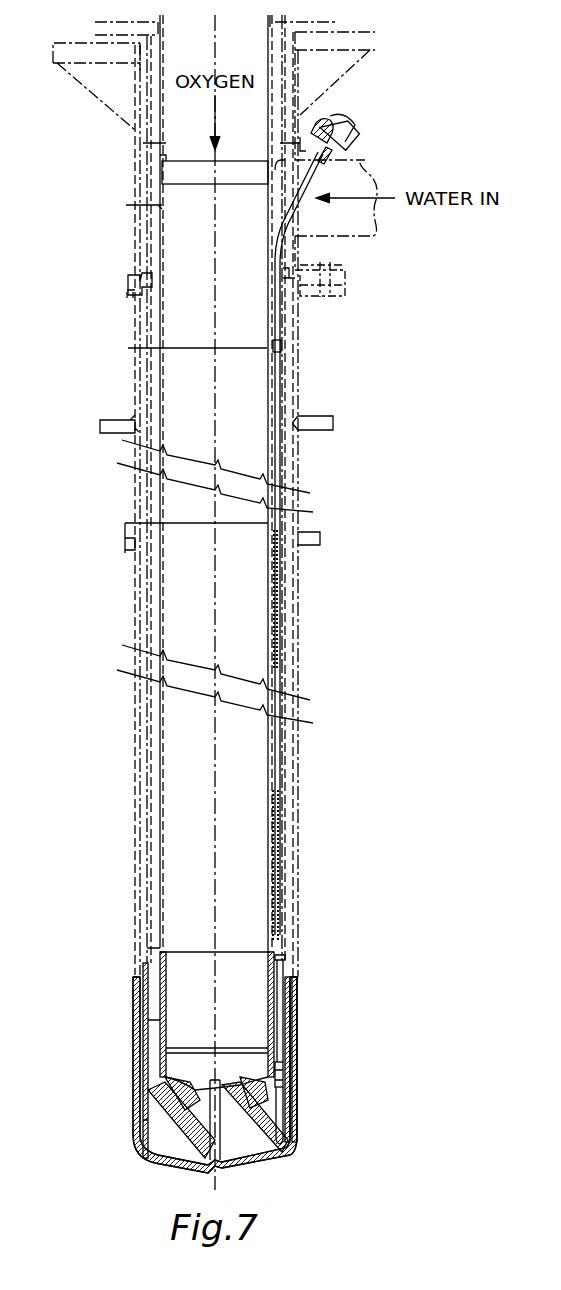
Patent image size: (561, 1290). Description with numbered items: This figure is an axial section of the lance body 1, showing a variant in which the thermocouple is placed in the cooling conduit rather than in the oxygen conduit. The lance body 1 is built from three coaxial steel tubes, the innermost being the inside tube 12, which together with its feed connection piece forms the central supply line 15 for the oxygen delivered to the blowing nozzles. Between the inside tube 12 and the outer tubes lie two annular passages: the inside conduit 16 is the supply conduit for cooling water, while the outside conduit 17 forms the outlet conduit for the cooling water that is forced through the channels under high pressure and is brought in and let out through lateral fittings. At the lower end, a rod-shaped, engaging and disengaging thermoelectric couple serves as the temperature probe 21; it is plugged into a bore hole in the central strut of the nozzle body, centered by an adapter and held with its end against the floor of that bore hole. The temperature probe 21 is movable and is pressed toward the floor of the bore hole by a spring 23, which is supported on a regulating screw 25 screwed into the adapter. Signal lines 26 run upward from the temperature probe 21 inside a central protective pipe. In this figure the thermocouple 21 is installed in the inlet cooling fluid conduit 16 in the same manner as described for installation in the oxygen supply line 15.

The lance body 1 is at (100, 1082).
The inside tube 12 is at (162, 800).
The central supply line 15 is at (195, 887).
The inside conduit 16 is at (290, 984).
The outside conduit 17 is at (292, 1010).
The temperature probe 21 is at (293, 1127).
The spring 23 is at (285, 1090).
The regulating screw 25 is at (283, 1068).
The signal lines 26 is at (276, 582).